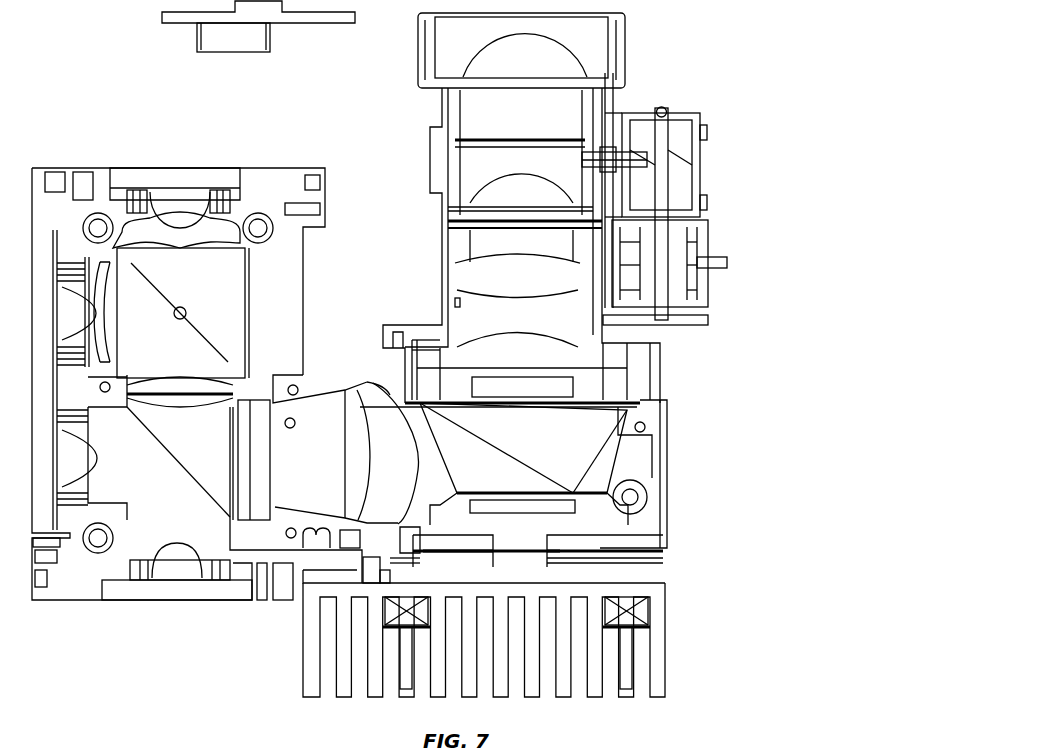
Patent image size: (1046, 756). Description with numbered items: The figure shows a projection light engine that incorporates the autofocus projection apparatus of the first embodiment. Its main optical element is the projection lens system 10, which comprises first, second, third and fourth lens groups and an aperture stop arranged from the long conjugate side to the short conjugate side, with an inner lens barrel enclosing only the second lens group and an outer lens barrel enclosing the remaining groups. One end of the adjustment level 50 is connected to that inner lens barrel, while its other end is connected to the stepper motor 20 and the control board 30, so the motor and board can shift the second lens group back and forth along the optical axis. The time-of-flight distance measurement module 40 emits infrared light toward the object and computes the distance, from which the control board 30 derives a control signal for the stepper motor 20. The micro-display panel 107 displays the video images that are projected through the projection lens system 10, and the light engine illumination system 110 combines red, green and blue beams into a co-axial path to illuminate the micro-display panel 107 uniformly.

The time-of-flight distance measurement module 40 is at (209, 54).
The projection lens system 10 is at (615, 73).
The adjustment level 50 is at (634, 177).
The stepper motor 20 is at (671, 279).
The control board 30 is at (671, 279).
The micro-display panel 107 is at (578, 529).
The light engine illumination system 110 is at (155, 500).